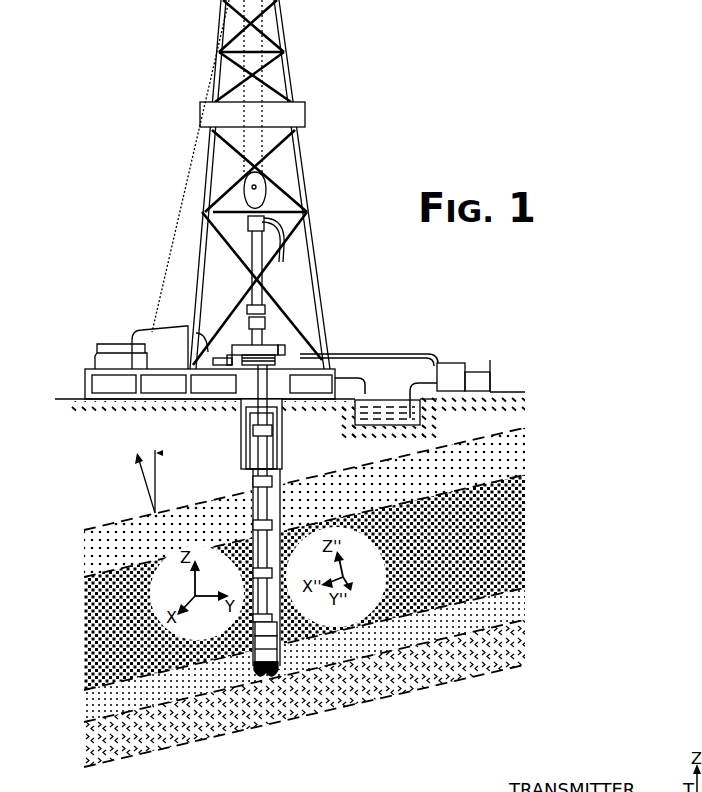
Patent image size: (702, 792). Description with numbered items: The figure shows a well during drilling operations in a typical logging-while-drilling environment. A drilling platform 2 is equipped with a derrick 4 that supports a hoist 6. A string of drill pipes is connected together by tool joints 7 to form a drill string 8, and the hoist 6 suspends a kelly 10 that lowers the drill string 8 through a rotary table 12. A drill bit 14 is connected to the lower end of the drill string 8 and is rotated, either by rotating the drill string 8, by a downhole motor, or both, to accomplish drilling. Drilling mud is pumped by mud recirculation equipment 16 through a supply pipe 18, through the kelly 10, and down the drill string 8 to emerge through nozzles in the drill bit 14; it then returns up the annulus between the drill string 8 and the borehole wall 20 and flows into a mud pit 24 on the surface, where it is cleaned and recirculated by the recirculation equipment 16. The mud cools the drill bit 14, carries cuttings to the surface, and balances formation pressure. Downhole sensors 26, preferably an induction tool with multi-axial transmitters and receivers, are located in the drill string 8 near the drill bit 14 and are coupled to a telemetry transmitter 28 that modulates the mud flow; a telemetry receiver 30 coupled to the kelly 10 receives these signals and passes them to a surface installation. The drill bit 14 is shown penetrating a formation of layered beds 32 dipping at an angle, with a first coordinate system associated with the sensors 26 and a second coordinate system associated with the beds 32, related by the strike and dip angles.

The drilling platform 2 is at (88, 372).
The derrick 4 is at (285, 76).
The hoist 6 is at (263, 192).
The tool joints 7 is at (257, 473).
The drill string 8 is at (252, 490).
The kelly 10 is at (256, 250).
The rotary table 12 is at (281, 345).
The drill bit 14 is at (278, 668).
The mud recirculation equipment 16 is at (453, 364).
The supply pipe 18 is at (396, 352).
The borehole wall 20 is at (272, 482).
The mud pit 24 is at (428, 418).
The downhole sensors 26 is at (261, 641).
The telemetry transmitter 28 is at (277, 646).
The telemetry receiver 30 is at (264, 310).
The layered beds 32 is at (537, 648).